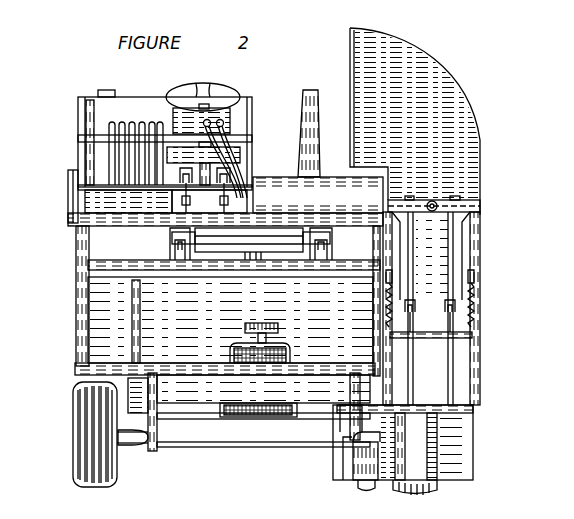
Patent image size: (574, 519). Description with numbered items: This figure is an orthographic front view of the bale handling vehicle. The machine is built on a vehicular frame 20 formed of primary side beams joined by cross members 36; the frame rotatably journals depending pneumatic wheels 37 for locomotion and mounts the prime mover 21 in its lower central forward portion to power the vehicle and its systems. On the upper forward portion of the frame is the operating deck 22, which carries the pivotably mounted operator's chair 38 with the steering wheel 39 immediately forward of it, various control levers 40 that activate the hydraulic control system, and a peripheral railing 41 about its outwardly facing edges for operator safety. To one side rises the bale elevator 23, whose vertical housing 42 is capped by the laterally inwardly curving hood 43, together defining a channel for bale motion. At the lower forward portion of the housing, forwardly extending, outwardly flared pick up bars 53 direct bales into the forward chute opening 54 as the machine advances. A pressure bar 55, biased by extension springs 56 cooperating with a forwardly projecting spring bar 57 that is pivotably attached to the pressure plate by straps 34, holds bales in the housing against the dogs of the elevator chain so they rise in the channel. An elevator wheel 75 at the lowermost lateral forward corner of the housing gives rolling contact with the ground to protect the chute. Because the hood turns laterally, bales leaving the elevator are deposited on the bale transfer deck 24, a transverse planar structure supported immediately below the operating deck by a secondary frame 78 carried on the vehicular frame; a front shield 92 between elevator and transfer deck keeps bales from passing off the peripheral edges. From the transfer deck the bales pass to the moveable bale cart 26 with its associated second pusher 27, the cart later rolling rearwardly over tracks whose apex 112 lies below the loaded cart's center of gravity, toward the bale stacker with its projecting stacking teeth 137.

The vehicular frame 20 is at (213, 425).
The prime mover 21 is at (226, 346).
The operating deck 22 is at (110, 213).
The bale elevator 23 is at (463, 119).
The bale transfer deck 24 is at (325, 206).
The moveable bale cart 26 is at (290, 259).
The second pusher 27 is at (58, 193).
The straps 34 is at (444, 330).
The cross members 36 is at (328, 420).
The pneumatic wheels 37 is at (97, 447).
The operator's chair 38 is at (240, 153).
The steering wheel 39 is at (205, 85).
The control levers 40 is at (153, 120).
The peripheral railing 41 is at (160, 100).
The vertical housing 42 is at (435, 198).
The hood 43 is at (425, 60).
The pick up bars 53 is at (455, 408).
The forward chute opening 54 is at (445, 458).
The pressure bar 55 is at (398, 252).
The extension springs 56 is at (384, 309).
The spring bar 57 is at (440, 337).
The elevator wheel 75 is at (366, 490).
The secondary frame 78 is at (80, 244).
The front shield 92 is at (352, 205).
The apex 112 is at (253, 262).
The stacking teeth 137 is at (110, 90).